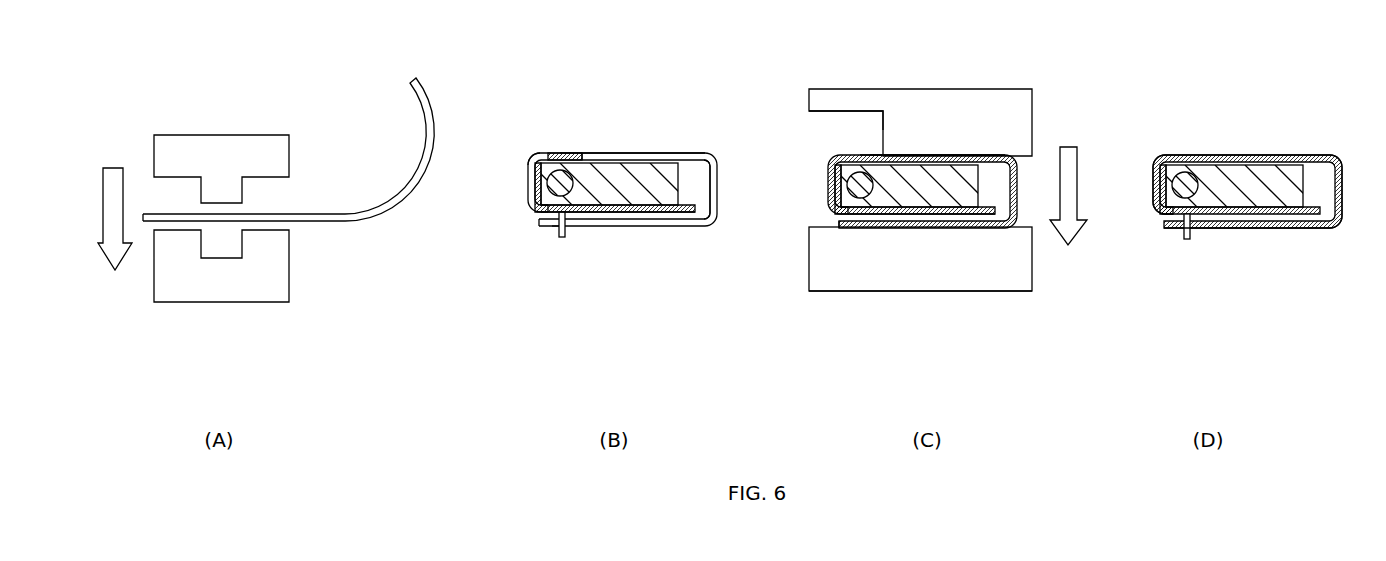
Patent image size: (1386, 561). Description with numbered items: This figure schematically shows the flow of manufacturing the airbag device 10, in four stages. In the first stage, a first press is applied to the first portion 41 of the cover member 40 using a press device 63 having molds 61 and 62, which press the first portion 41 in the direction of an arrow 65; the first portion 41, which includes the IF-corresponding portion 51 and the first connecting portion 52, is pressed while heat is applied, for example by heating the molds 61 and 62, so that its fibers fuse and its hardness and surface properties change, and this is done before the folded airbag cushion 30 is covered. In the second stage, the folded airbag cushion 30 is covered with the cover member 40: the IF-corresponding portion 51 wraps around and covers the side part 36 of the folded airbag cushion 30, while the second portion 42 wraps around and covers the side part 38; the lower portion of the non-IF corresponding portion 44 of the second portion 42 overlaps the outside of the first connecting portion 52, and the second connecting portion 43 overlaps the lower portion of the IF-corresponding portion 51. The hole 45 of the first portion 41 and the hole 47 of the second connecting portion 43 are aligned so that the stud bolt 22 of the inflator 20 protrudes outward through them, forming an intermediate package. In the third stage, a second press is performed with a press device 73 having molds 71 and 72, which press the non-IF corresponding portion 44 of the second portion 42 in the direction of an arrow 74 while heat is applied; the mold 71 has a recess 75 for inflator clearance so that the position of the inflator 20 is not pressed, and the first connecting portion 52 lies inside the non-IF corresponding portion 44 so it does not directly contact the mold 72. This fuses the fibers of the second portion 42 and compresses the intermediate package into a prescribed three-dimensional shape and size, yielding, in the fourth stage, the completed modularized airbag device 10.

The airbag device 10 is at (1322, 135).
The inflator 20 is at (535, 203).
The stud bolt 22 is at (562, 240).
The folded airbag cushion 30 is at (635, 175).
The side part 36 is at (540, 183).
The side part 38 is at (683, 183).
The cover member 40 is at (362, 200).
The first portion 41 is at (262, 219).
The second portion 42 is at (682, 152).
The second connecting portion 43 is at (539, 223).
The non-IF corresponding portion 44 is at (912, 154).
The hole 45 is at (541, 214).
The hole 47 is at (552, 228).
The IF-corresponding portion 51 is at (549, 158).
The first connecting portion 52 is at (620, 213).
The mold 61 is at (233, 140).
The mold 62 is at (208, 277).
The press device 63 is at (238, 222).
The arrow 65 is at (115, 165).
The mold 71 is at (985, 100).
The mold 72 is at (1003, 262).
The press device 73 is at (988, 303).
The arrow 74 is at (1070, 228).
The recess 75 is at (822, 118).